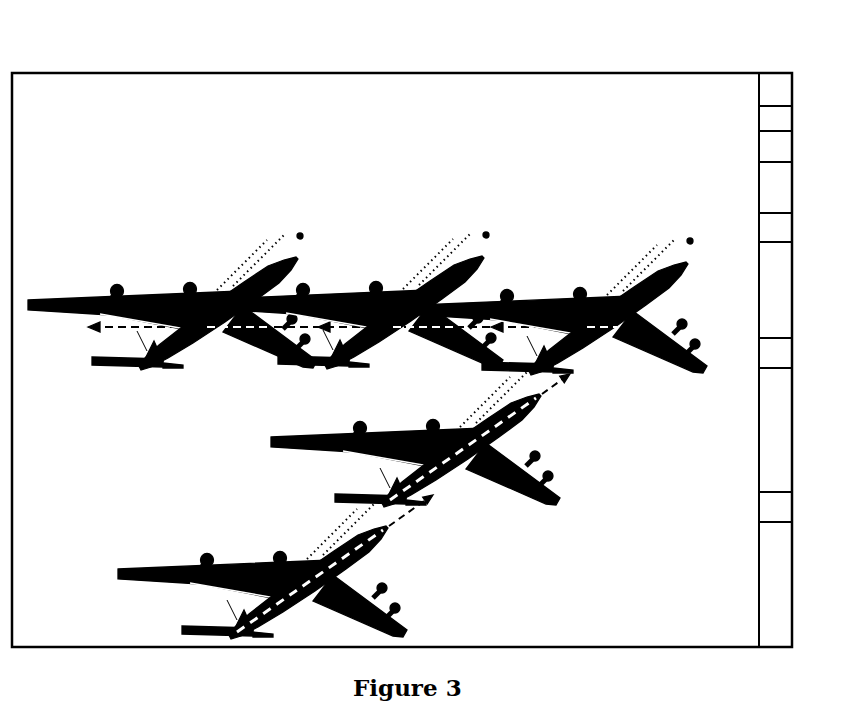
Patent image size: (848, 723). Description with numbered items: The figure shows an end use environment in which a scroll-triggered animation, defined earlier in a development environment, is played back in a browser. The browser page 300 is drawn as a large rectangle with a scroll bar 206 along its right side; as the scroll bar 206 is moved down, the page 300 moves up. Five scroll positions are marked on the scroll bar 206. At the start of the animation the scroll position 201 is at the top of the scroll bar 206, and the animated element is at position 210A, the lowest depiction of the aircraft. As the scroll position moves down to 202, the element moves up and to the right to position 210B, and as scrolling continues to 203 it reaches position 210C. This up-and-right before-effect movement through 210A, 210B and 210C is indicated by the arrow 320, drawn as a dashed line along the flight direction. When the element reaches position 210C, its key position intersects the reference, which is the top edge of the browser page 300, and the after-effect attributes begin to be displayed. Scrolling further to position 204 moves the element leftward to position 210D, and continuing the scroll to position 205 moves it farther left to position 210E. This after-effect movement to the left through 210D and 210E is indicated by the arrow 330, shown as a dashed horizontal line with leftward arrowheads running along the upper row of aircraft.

The page 300 is at (100, 45).
The scroll bar 206 is at (770, 70).
The scroll position 201 is at (758, 88).
The scroll position 202 is at (758, 153).
The scroll position 203 is at (758, 233).
The scroll position 204 is at (758, 355).
The scroll position 205 is at (758, 510).
The position of element 210A is at (389, 531).
The position of element 210B is at (541, 396).
The position of element 210C is at (690, 266).
The position of element 210D is at (484, 255).
The position of element 210E is at (293, 260).
The arrow 320 is at (400, 513).
The arrow 330 is at (490, 327).